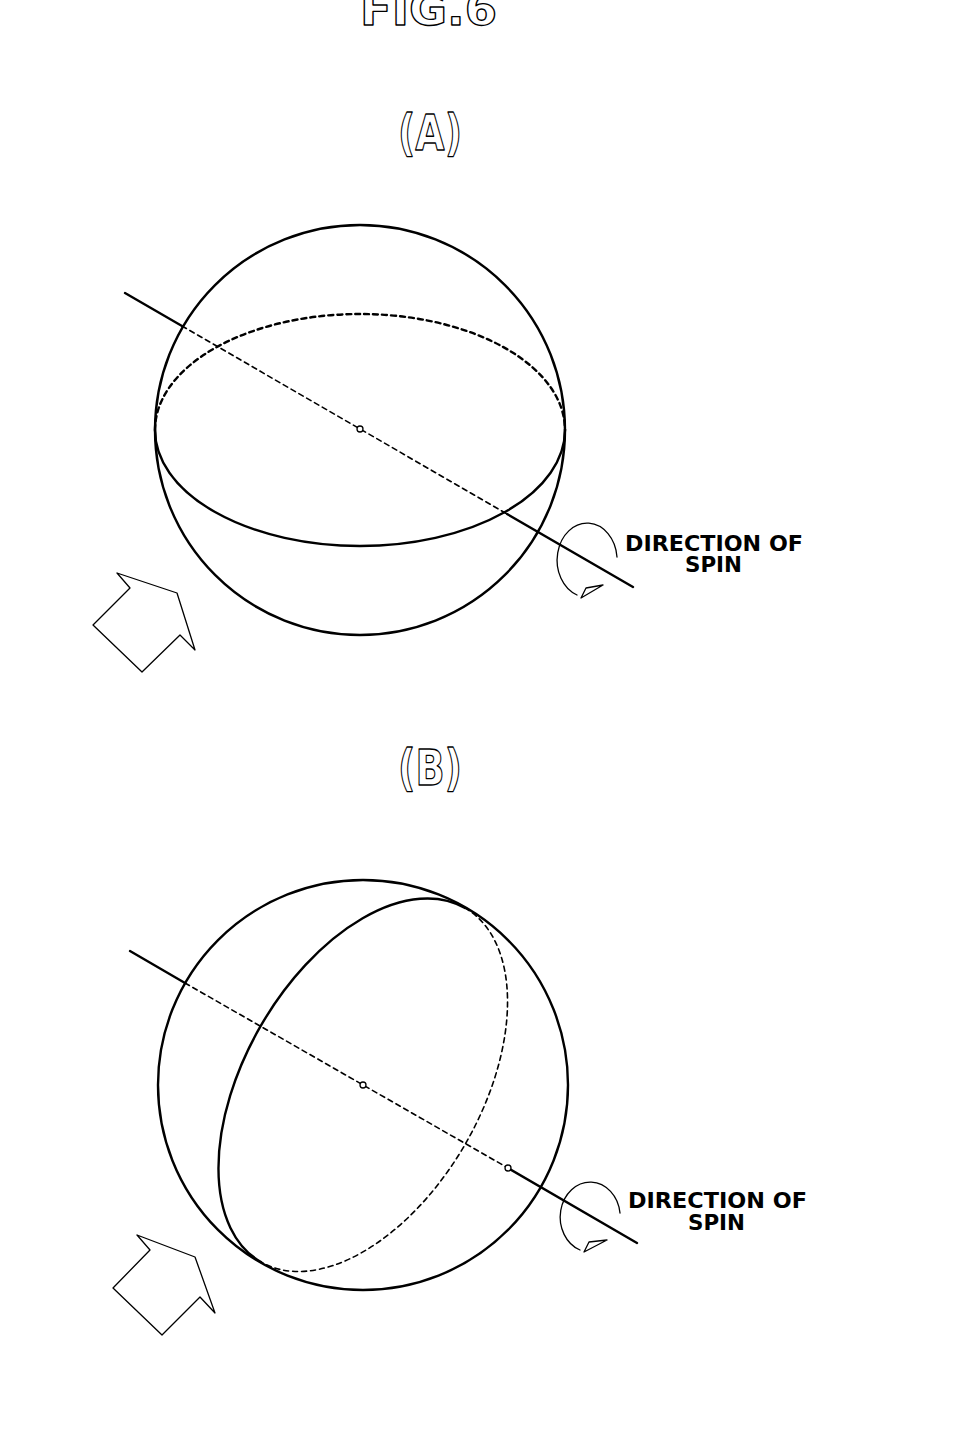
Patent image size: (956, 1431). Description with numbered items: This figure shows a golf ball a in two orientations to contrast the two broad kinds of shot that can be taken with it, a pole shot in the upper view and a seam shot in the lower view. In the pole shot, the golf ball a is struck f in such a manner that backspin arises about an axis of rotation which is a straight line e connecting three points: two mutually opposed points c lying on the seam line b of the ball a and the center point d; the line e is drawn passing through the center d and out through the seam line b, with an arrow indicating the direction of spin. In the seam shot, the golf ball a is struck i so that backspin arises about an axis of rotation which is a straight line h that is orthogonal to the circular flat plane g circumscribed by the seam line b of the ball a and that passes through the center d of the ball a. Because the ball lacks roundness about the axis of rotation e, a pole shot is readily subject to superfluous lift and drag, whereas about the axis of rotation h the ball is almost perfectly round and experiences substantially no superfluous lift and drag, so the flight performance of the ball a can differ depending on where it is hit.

The golf ball a is at (524, 340).
The seam line b is at (462, 528).
The mutually opposed points on the seam line c is at (216, 346).
The center point d is at (364, 426).
The axis of rotation (pole shot) e is at (152, 308).
The striking direction (pole shot) f is at (144, 627).
The circular flat plane g is at (348, 1220).
The axis of rotation (seam shot) h is at (157, 965).
The striking direction (seam shot) i is at (164, 1290).